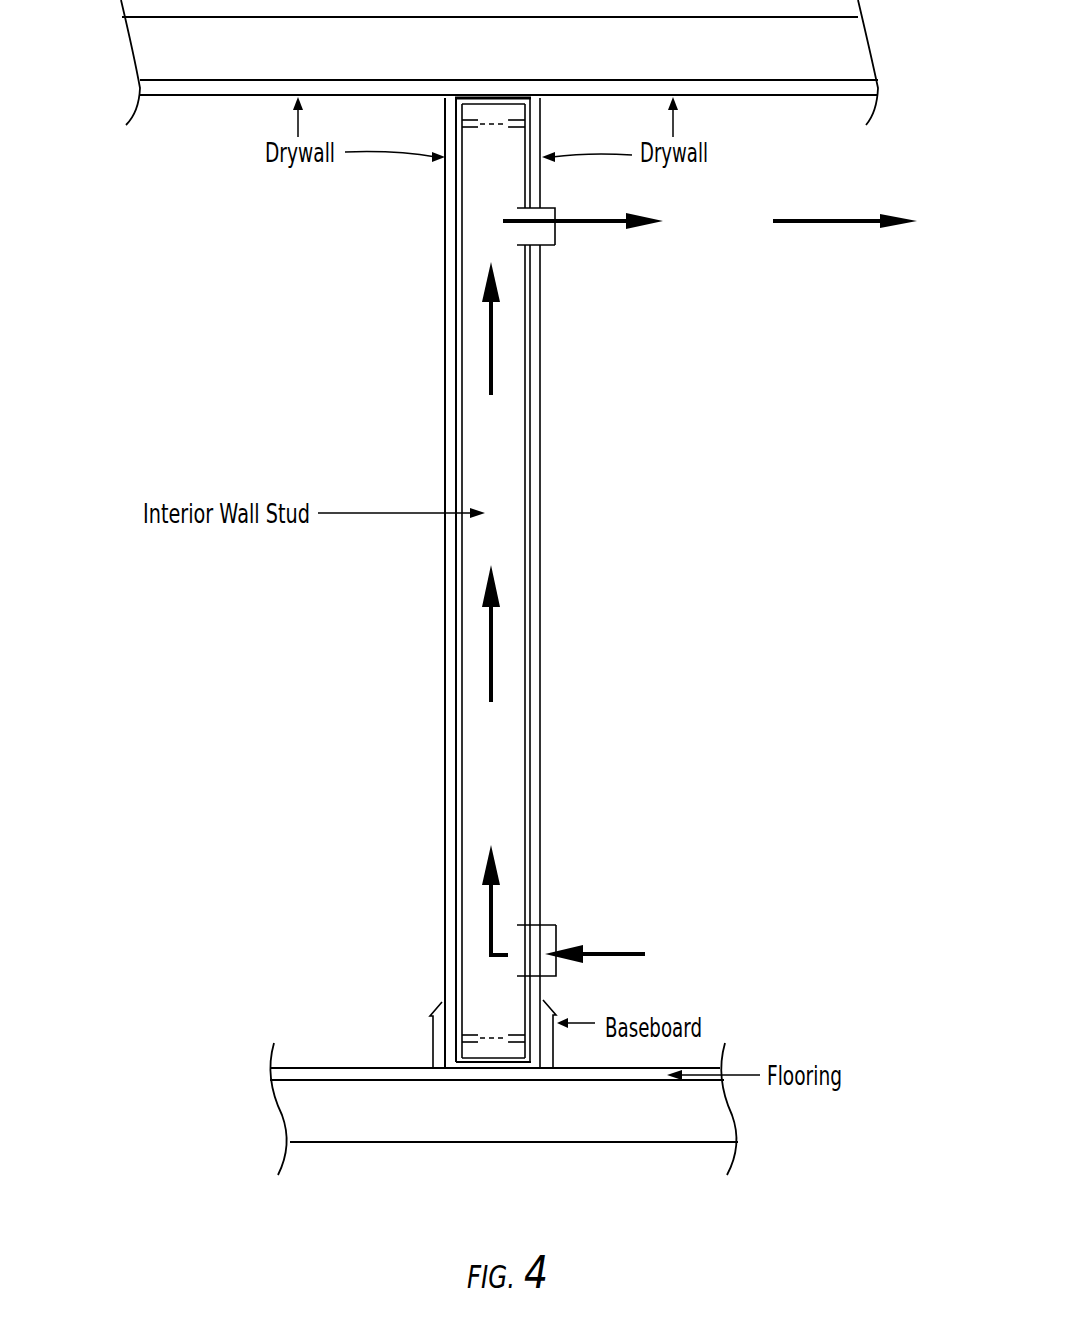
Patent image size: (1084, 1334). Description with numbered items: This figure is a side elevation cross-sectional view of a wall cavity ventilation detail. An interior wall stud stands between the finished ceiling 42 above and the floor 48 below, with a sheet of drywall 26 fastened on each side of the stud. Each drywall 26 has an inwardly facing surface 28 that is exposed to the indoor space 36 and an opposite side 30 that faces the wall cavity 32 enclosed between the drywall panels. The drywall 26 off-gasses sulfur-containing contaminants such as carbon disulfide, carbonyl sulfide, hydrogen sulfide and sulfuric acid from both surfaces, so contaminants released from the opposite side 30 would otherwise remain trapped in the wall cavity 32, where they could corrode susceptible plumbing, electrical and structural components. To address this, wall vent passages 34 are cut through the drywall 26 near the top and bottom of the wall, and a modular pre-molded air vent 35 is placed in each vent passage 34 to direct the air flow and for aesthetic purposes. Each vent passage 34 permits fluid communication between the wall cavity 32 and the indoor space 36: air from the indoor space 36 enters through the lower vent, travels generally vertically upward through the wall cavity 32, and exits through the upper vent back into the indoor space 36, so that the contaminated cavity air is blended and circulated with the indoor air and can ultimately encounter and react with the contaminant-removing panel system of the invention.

The drywall 26 is at (445, 572).
The inwardly facing surface 28 is at (540, 482).
The opposite side 30 is at (520, 537).
The wall cavity 32 is at (515, 420).
The wall vent passage 34 is at (539, 262).
The modular pre-molded air vent 35 is at (555, 245).
The indoor space 36 is at (839, 570).
The finished ceiling 42 is at (754, 102).
The floor 48 is at (392, 1045).